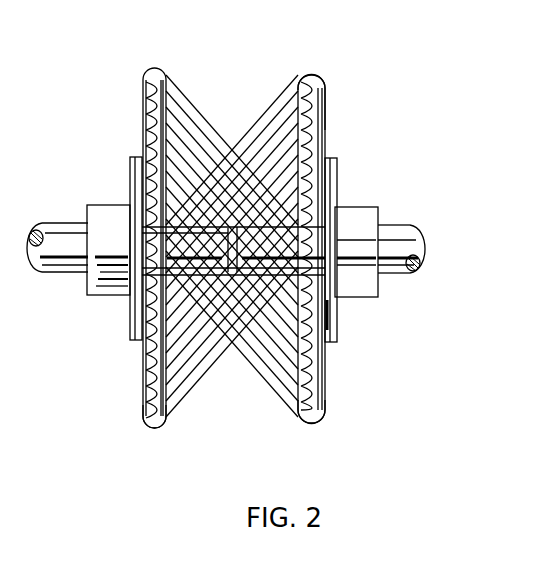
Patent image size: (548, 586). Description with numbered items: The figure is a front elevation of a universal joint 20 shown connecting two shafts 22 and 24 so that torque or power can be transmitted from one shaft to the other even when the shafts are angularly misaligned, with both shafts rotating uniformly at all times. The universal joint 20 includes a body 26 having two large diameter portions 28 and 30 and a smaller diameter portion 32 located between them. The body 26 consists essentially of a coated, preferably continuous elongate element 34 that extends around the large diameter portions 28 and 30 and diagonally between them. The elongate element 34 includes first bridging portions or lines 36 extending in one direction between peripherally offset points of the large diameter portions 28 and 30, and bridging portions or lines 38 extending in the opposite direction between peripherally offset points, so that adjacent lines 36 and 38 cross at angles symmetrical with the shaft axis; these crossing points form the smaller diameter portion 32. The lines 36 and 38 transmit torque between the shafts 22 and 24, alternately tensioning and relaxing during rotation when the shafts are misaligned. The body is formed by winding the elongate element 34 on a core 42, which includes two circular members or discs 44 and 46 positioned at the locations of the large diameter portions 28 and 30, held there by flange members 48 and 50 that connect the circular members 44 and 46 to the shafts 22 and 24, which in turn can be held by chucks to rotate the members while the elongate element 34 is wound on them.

The universal joint 20 is at (151, 60).
The shaft 22 is at (51, 272).
The shaft 24 is at (398, 280).
The body 26 is at (210, 102).
The large diameter portion 28 is at (150, 70).
The large diameter portion 30 is at (308, 73).
The smaller diameter portion 32 is at (231, 348).
The elongate element 34 is at (168, 432).
The bridging portions or lines 36 is at (199, 380).
The bridging portions or lines 38 is at (285, 405).
The core 42 is at (332, 117).
The circular member or disc 44 is at (150, 393).
The circular member or disc 46 is at (325, 370).
The flange member 48 is at (108, 205).
The flange member 50 is at (355, 207).